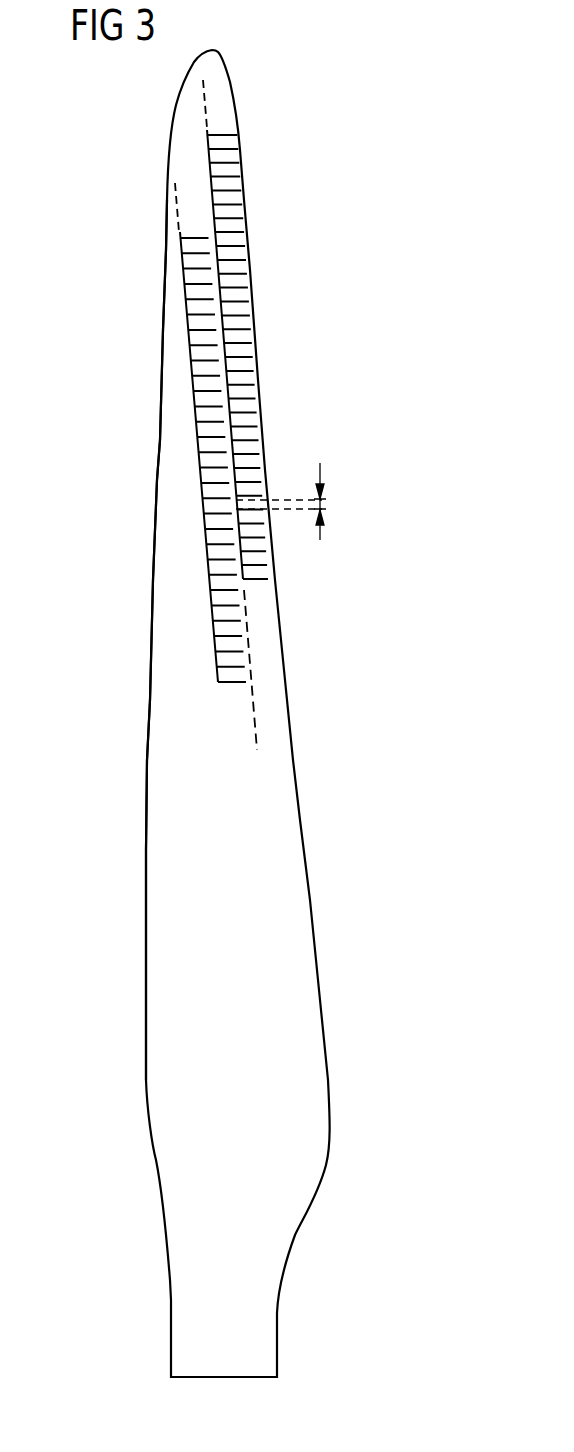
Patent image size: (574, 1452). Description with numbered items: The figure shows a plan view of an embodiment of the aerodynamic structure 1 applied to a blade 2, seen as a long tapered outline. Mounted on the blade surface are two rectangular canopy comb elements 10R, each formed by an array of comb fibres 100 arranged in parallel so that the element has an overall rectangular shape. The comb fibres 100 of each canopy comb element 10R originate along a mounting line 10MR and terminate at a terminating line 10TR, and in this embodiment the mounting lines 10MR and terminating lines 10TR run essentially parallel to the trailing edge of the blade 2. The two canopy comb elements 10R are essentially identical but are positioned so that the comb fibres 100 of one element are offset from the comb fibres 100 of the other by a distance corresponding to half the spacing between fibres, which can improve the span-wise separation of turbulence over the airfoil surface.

The aerodynamic structure 1 is at (350, 106).
The blade 2 is at (118, 672).
The comb fibres 100 is at (215, 448).
The rectangular canopy comb element 10R is at (258, 582).
The mounting line 10MR is at (200, 103).
The terminating line 10TR is at (259, 740).